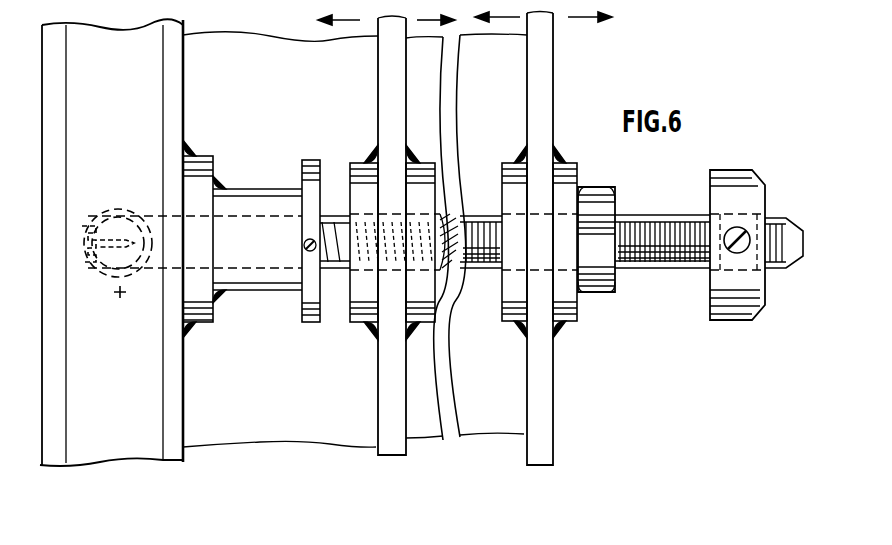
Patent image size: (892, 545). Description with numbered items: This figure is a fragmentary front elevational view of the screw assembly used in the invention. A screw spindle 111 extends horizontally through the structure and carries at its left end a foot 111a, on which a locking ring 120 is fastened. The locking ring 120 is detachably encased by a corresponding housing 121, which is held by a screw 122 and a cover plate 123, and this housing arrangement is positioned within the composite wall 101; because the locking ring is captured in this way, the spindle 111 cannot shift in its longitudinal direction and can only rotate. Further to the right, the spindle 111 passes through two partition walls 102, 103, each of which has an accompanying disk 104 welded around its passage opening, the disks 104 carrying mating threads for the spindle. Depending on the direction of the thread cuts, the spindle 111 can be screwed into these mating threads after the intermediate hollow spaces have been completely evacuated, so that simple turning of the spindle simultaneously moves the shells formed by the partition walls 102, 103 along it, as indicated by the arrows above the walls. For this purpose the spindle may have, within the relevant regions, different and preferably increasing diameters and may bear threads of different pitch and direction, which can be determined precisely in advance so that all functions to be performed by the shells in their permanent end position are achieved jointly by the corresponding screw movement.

The composite wall 101 is at (48, 462).
The partition wall 102 is at (393, 448).
The partition wall 103 is at (540, 455).
The disk 104 is at (425, 322).
The screw spindle 111 is at (131, 228).
The foot 111a is at (740, 310).
The locking ring 120 is at (125, 300).
The housing 121 is at (130, 192).
The screw 122 is at (80, 228).
The cover plate 123 is at (92, 275).